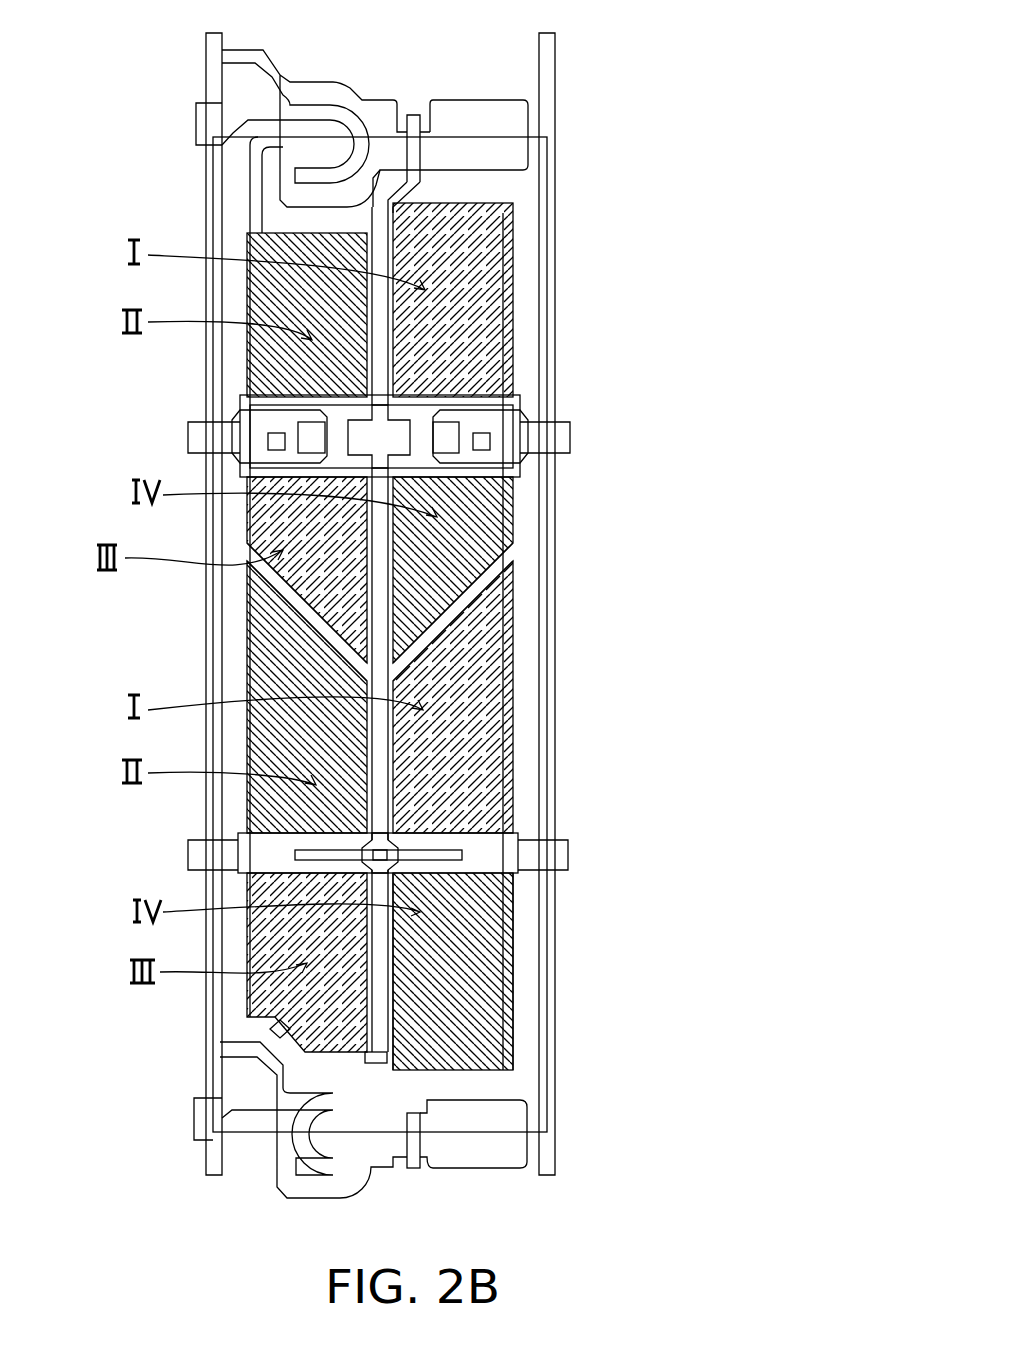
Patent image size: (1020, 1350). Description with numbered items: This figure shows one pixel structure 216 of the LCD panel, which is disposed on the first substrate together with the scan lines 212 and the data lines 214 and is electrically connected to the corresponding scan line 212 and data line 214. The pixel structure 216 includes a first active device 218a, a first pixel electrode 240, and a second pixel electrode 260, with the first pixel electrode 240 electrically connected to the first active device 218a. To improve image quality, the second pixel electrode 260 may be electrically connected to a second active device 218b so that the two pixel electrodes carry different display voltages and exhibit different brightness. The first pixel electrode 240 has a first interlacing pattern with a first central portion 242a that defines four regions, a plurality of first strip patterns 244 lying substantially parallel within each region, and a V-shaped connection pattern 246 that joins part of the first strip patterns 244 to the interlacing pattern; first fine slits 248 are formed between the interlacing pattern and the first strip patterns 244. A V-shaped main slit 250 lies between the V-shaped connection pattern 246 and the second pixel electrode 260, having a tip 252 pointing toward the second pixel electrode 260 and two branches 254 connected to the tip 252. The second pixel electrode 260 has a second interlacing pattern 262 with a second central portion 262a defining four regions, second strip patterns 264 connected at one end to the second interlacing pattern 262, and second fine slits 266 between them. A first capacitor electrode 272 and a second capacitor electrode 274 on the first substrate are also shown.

The scan lines 212 is at (470, 115).
The data lines 214 is at (207, 175).
The pixel structures 216 is at (755, 1211).
The first active device 218a is at (329, 76).
The second active device 218b is at (419, 91).
The first pixel electrode 240 is at (486, 442).
The first central portion 242a is at (440, 385).
The first strip patterns 244 is at (451, 594).
The V-shaped connection pattern 246 is at (477, 570).
The first fine slits 248 is at (482, 515).
The V-shaped main slit 250 is at (486, 697).
The tip 252 is at (398, 668).
The branches 254 is at (464, 609).
The second pixel electrode 260 is at (486, 975).
The second interlacing pattern 262 is at (490, 942).
The second central portion 262a is at (420, 902).
The second strip patterns 264 is at (393, 960).
The second fine slits 266 is at (667, 905).
The first capacitor electrodes 272 is at (190, 440).
The second capacitor electrodes 274 is at (190, 857).